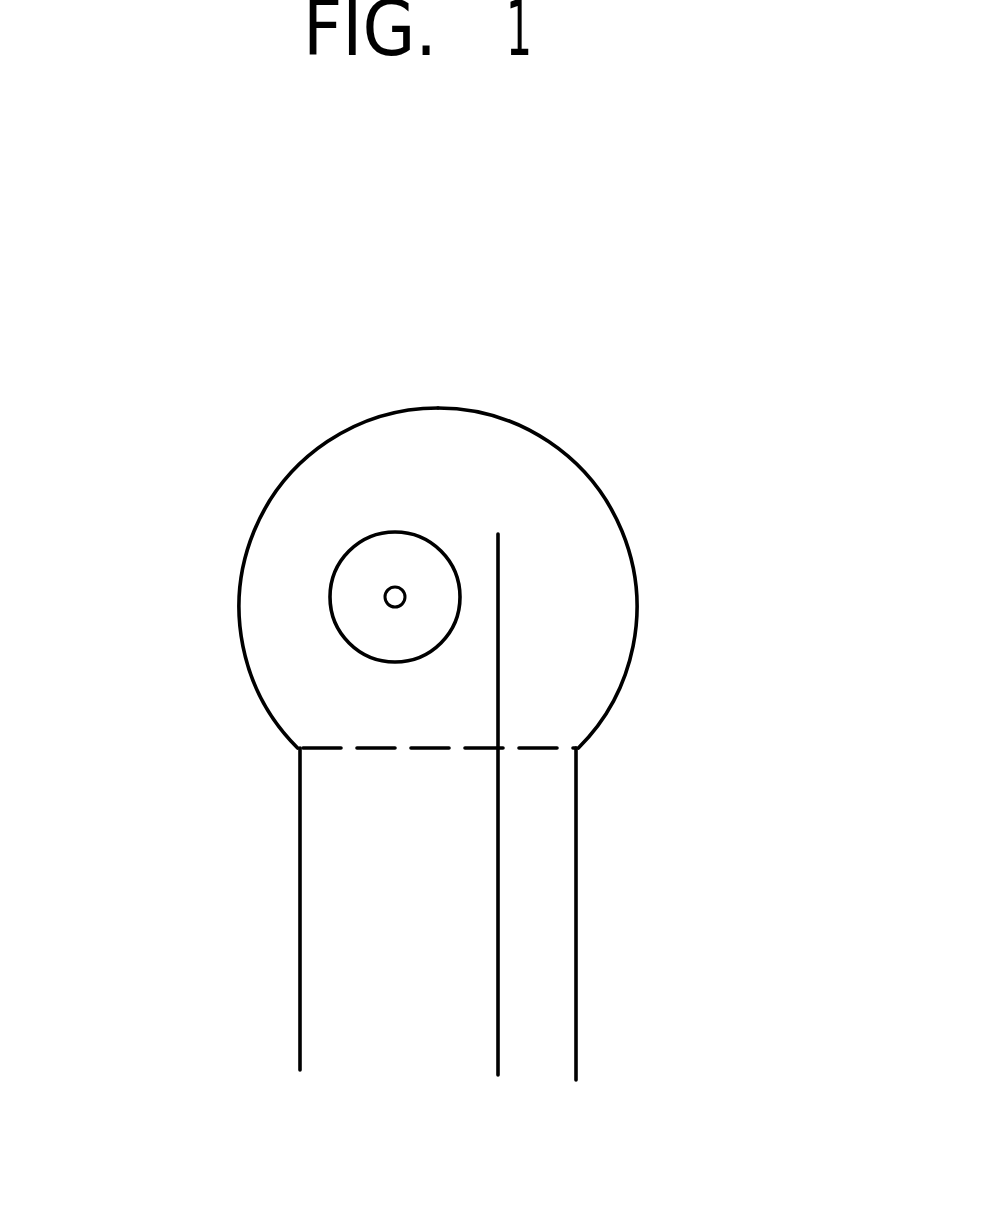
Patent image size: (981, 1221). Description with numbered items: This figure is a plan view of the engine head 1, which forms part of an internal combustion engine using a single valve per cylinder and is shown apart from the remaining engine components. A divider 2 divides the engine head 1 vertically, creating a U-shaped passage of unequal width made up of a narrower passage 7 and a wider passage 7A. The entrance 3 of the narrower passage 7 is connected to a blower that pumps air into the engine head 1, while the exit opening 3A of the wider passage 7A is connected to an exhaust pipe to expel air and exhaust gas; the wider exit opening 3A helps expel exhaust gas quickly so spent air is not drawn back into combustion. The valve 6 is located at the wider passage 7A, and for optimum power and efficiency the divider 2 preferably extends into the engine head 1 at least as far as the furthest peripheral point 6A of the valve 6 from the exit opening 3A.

The engine head 1 is at (592, 398).
The divider 2 is at (498, 577).
The entrance 3 is at (518, 748).
The exit opening 3A is at (353, 748).
The valve 6 is at (365, 625).
The furthest peripheral point 6A is at (393, 532).
The narrower passage 7 is at (557, 648).
The wider passage 7A is at (317, 705).